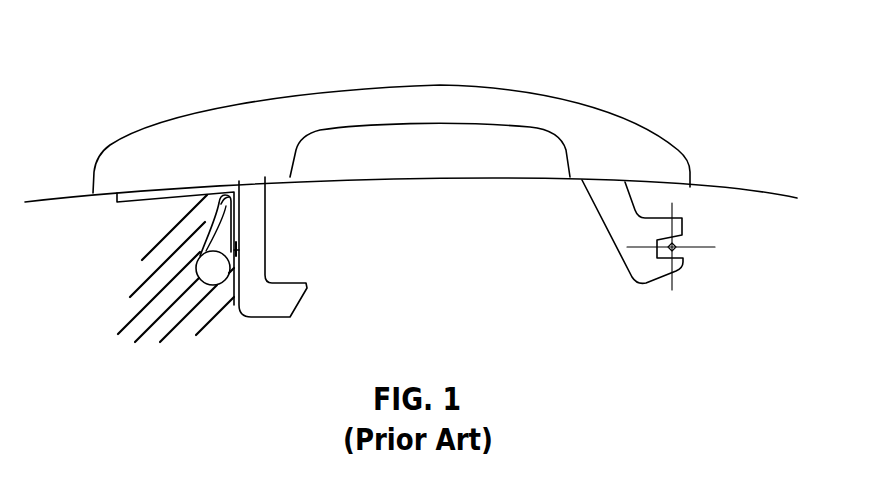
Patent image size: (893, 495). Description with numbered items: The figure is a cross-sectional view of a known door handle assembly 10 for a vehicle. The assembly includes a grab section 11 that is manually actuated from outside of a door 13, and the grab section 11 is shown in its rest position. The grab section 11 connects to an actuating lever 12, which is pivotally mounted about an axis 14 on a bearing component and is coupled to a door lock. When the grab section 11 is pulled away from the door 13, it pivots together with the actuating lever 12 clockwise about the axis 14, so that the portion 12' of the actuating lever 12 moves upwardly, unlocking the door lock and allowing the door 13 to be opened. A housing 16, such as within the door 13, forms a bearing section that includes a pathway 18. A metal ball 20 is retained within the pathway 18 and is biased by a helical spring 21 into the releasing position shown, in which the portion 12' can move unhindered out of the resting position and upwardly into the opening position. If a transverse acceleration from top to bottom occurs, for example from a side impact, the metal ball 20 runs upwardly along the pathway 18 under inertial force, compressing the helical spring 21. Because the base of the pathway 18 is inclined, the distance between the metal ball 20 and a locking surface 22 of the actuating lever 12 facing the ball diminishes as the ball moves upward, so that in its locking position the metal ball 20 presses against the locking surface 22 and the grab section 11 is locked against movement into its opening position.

The door handle assembly 10 is at (140, 48).
The grab section 11 is at (421, 97).
The actuating lever 12 is at (605, 231).
The portion of the actuating lever 12' is at (293, 247).
The door 13 is at (760, 193).
The axis 14 is at (675, 249).
The housing 16 is at (170, 283).
The pathway 18 is at (199, 238).
The metal ball 20 is at (213, 272).
The helical spring 21 is at (218, 206).
The locking surface 22 is at (236, 255).